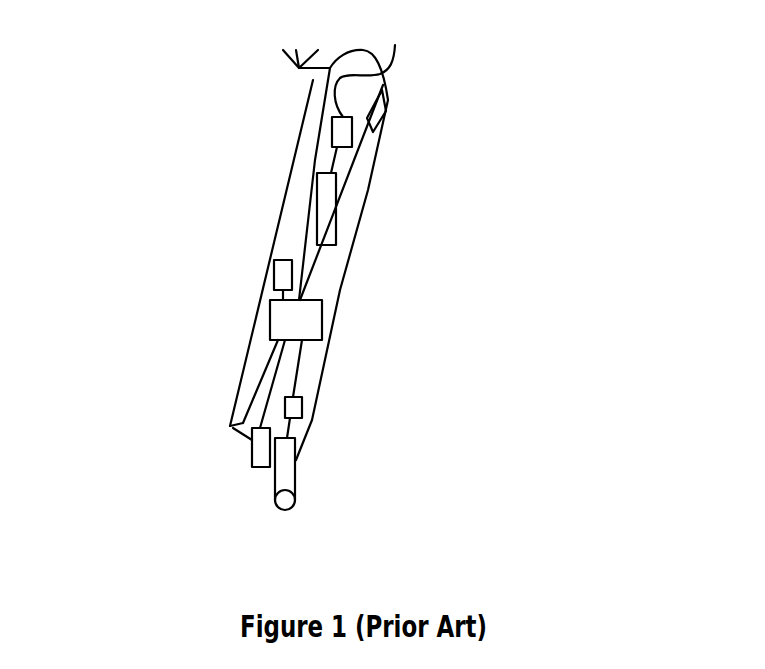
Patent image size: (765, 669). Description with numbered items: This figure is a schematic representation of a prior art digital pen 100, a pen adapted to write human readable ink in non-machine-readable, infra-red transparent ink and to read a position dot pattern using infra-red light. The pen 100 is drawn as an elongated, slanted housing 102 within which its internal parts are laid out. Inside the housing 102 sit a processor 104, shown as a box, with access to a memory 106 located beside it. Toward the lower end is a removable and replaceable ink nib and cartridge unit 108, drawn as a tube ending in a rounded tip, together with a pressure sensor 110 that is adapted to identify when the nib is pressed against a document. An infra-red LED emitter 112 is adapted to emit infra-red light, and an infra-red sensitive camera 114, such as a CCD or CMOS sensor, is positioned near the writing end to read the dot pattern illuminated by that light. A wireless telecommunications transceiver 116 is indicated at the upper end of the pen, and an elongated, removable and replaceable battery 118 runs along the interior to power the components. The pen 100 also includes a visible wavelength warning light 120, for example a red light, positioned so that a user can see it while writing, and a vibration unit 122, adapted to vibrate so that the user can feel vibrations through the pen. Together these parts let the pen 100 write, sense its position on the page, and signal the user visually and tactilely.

The digital pen 100 is at (390, 172).
The housing 102 is at (302, 113).
The processor 104 is at (322, 308).
The memory 106 is at (285, 268).
The ink nib and cartridge unit 108 is at (298, 475).
The pressure sensor 110 is at (297, 410).
The infra-red LED emitter 112 is at (230, 426).
The infra-red sensitive camera 114 is at (260, 468).
The wireless telecommunications transceiver 116 is at (283, 50).
The battery 118 is at (332, 208).
The visible wavelength warning light 120 is at (384, 100).
The vibration unit 122 is at (368, 82).